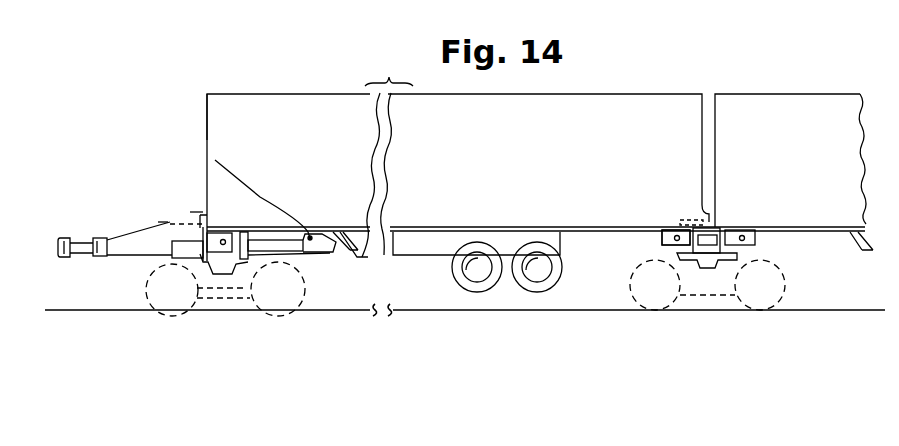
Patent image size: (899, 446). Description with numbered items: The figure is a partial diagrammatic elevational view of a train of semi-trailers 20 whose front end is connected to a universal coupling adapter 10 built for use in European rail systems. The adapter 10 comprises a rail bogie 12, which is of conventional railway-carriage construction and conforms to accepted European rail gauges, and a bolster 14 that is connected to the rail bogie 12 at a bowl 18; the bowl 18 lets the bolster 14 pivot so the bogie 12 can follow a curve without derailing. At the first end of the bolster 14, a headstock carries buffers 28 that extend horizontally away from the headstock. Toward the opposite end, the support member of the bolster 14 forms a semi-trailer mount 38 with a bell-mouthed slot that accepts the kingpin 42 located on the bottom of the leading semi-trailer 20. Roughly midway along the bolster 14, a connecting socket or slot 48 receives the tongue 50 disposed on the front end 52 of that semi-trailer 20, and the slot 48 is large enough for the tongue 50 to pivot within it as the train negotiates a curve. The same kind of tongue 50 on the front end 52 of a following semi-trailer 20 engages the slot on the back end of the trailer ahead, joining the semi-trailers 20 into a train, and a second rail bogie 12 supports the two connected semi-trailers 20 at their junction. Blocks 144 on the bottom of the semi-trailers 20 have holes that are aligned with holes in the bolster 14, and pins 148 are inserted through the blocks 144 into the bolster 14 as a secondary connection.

The universal coupling adapter 10 is at (454, 280).
The rail bogie 12 is at (713, 297).
The bolster 14 is at (303, 262).
The bowl 18 is at (193, 268).
The semi-trailer 20 is at (302, 175).
The buffers 28 is at (60, 238).
The semi-trailer mount 38 is at (337, 247).
The kingpin 42 is at (215, 160).
The connecting socket or slot 48 is at (192, 215).
The tongue 50 is at (163, 220).
The front end 52 is at (207, 115).
The blocks 144 is at (235, 256).
The pins 148 is at (660, 235).